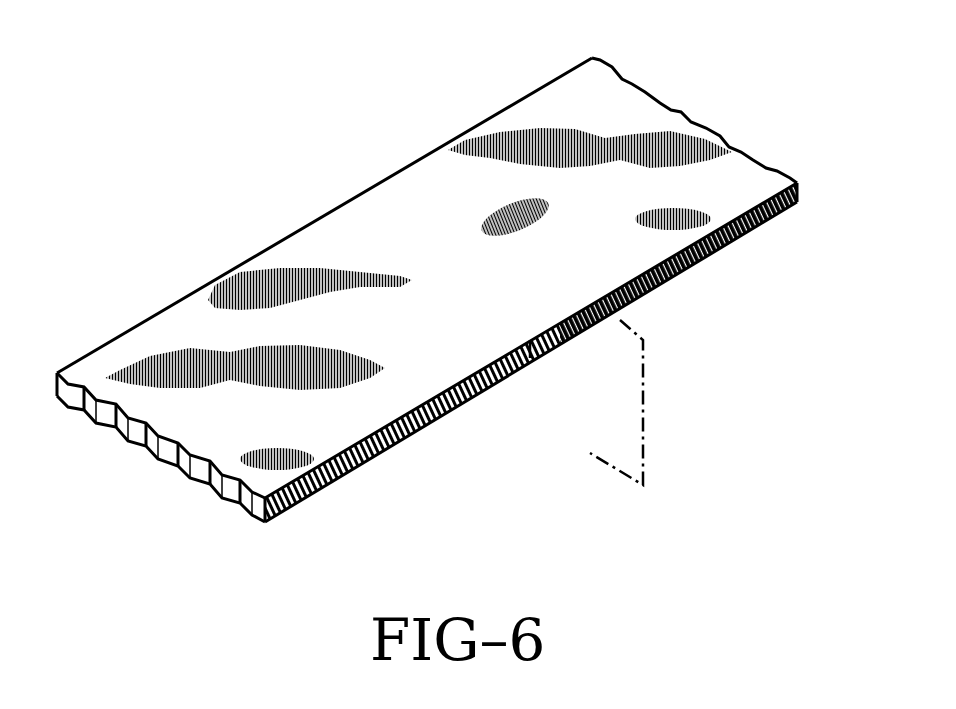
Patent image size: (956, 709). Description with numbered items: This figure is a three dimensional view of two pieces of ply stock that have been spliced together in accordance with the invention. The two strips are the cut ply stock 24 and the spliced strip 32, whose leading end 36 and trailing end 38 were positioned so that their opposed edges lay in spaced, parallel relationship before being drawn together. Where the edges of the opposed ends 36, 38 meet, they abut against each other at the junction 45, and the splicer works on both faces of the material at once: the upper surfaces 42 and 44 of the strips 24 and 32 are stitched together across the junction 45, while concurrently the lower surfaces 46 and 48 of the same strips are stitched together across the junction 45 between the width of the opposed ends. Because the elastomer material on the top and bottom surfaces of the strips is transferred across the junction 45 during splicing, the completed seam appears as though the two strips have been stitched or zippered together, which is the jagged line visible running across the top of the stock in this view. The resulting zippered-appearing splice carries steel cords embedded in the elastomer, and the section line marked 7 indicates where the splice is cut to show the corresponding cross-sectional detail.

The section line for FIG. 7 is at (620, 320).
The cut ply stock 24 is at (400, 192).
The spliced strip 32 is at (322, 243).
The leading end 36 is at (418, 246).
The trailing end 38 is at (450, 314).
The upper surface 42 is at (560, 98).
The upper surface 44 is at (140, 330).
The junction 45 is at (542, 350).
The lower surface 46 is at (650, 290).
The lower surface 48 is at (348, 472).